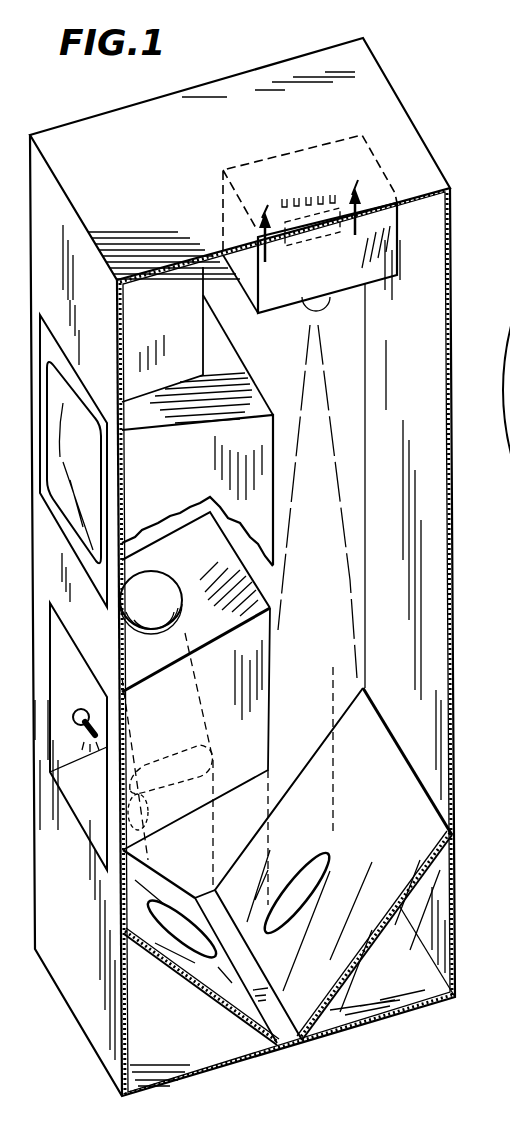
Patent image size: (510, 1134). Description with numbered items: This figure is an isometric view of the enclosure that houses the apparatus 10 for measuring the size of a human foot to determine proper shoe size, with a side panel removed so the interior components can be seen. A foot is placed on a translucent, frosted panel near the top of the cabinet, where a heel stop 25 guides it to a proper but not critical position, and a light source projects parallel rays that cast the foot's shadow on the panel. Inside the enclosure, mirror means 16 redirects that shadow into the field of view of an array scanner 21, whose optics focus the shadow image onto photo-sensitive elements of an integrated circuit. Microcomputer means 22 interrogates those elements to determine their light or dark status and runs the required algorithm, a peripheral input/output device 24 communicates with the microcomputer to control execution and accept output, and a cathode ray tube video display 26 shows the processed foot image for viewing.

The apparatus for measuring the size of a human foot 10 is at (271, 47).
The mirror means 16 is at (219, 999).
The array scanner 21 is at (369, 278).
The microcomputer means 22 is at (373, 158).
The peripheral I/O device 24 is at (172, 333).
The heel stop 25 is at (120, 788).
The cathode ray tube video display 26 is at (196, 470).